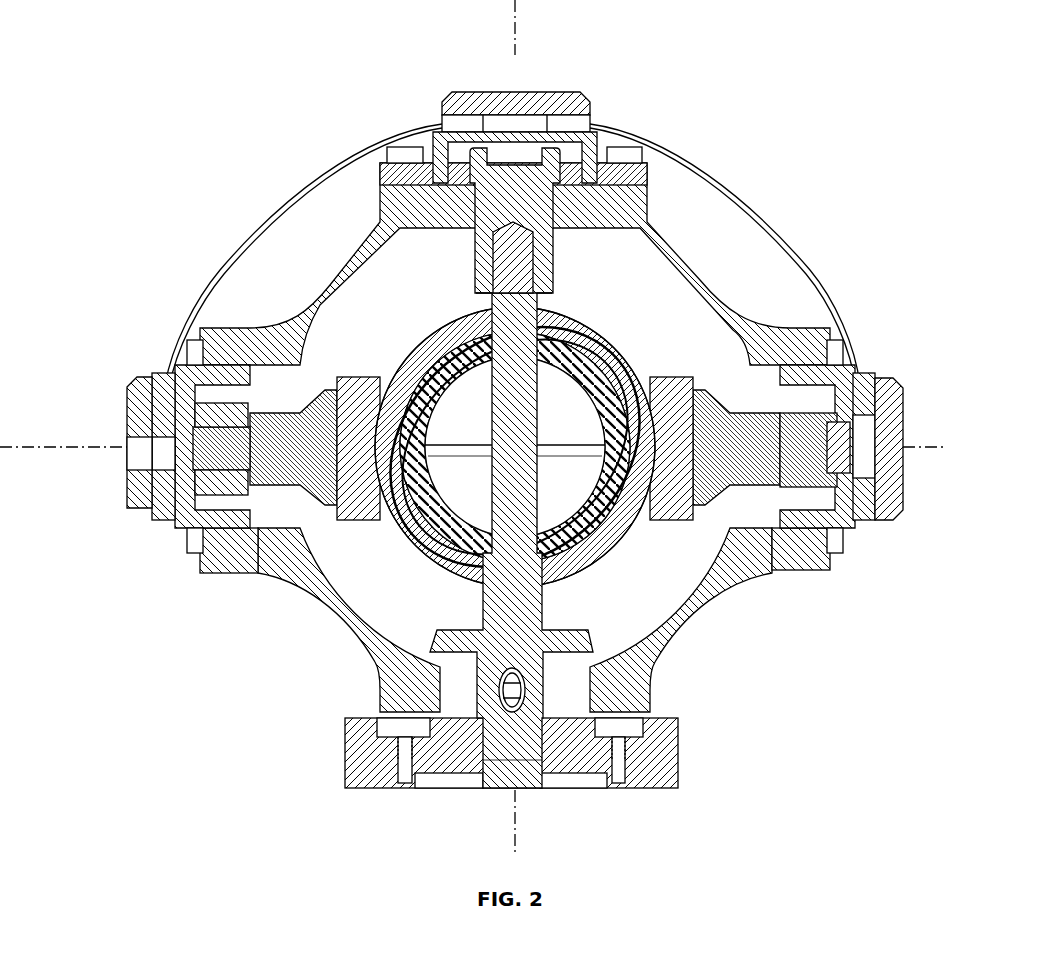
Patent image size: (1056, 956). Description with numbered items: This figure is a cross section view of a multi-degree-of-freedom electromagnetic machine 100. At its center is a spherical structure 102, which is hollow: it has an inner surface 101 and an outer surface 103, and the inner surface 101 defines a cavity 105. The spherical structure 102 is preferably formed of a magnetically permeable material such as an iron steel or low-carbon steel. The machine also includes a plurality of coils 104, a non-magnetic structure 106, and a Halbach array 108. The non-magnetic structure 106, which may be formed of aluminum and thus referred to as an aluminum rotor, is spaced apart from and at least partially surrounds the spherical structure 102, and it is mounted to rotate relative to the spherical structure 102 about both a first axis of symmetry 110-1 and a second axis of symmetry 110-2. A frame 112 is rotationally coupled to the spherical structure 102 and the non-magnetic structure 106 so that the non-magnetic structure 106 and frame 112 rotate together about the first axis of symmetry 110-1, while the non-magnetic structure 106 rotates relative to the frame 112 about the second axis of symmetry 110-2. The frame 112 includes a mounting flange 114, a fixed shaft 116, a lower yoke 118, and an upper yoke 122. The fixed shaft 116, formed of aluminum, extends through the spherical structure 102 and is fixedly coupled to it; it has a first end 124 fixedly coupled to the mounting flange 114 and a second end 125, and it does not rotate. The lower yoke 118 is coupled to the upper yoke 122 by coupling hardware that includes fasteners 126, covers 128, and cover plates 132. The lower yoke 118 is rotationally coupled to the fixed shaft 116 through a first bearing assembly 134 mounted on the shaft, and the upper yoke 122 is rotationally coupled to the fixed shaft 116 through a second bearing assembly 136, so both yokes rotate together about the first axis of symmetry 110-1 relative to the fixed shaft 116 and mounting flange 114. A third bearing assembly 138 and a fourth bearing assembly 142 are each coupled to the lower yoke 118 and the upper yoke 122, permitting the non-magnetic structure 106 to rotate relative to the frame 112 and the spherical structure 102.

The multi-degree-of-freedom electromagnetic machine 100 is at (215, 66).
The inner surface 101 is at (582, 398).
The spherical structure 102 is at (590, 348).
The outer surface 103 is at (622, 528).
The coils 104 is at (430, 326).
The cavity 105 is at (477, 486).
The non-magnetic structure 106 is at (310, 376).
The Halbach array 108 is at (352, 530).
The first axis of symmetry 110-1 is at (530, 42).
The second axis of symmetry 110-2 is at (915, 428).
The frame 112 is at (690, 228).
The mounting flange 114 is at (680, 757).
The fixed shaft 116 is at (537, 602).
The lower yoke 118 is at (345, 637).
The upper yoke 122 is at (340, 263).
The first end 124 is at (527, 772).
The second end 125 is at (535, 280).
The fasteners 126 is at (192, 352).
The covers 128 is at (155, 505).
The cover plates 132 is at (128, 392).
The first bearing assembly 134 is at (462, 702).
The second bearing assembly 136 is at (580, 213).
The third bearing assembly 138 is at (283, 530).
The fourth bearing assembly 142 is at (788, 572).